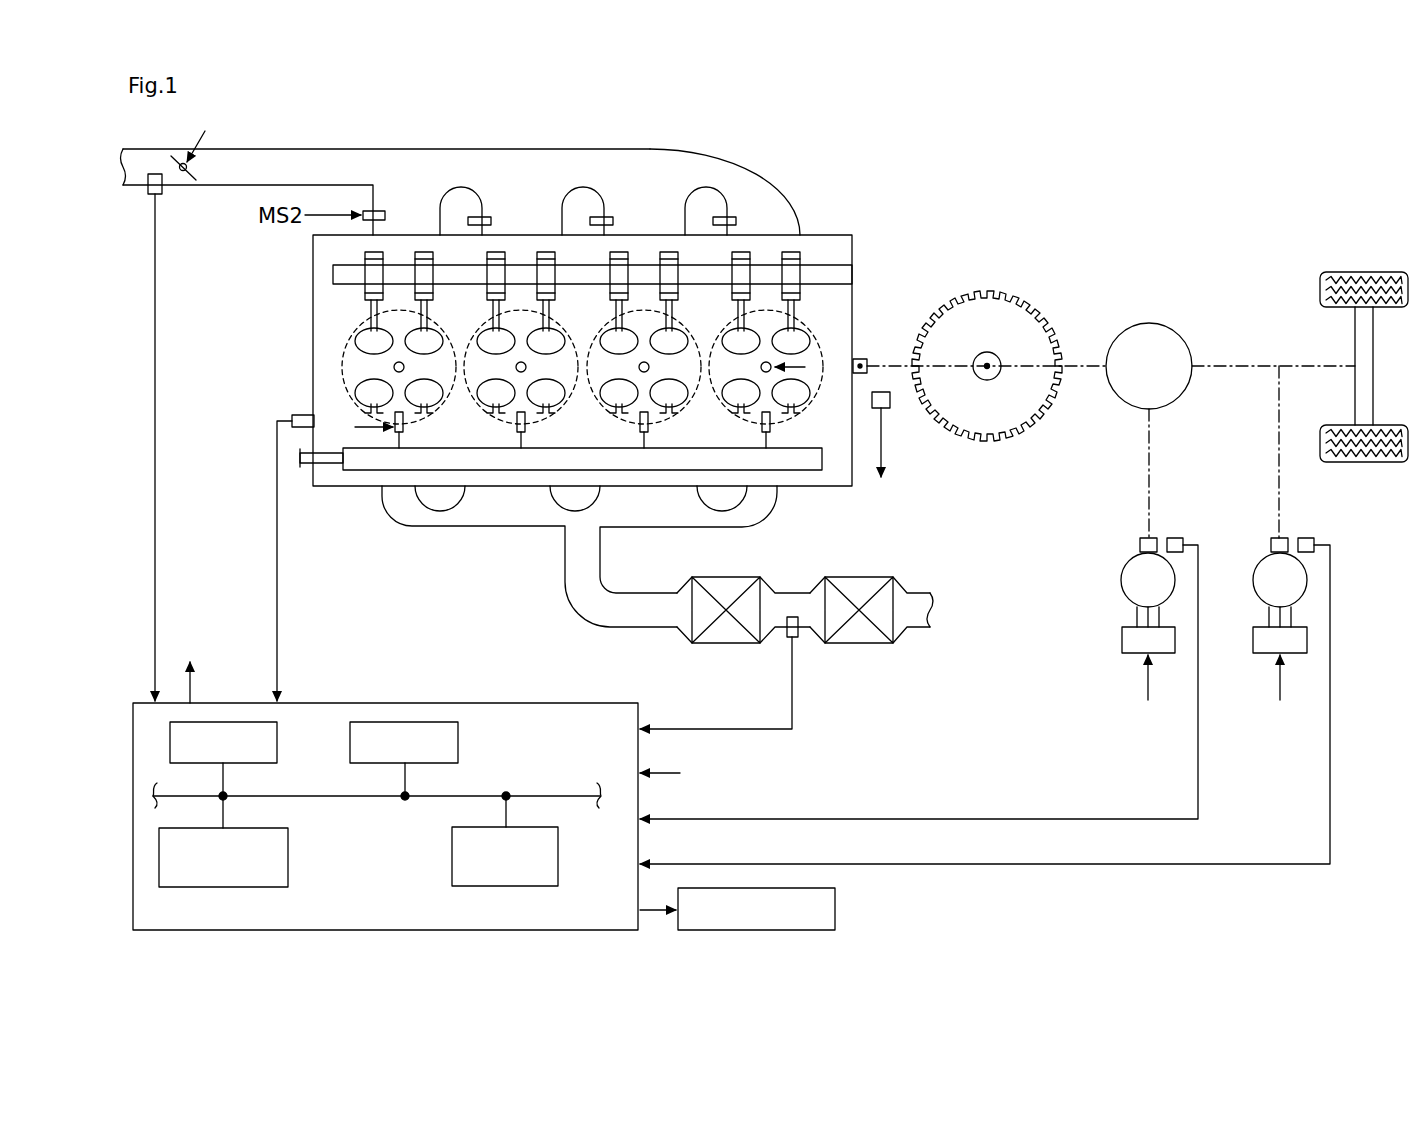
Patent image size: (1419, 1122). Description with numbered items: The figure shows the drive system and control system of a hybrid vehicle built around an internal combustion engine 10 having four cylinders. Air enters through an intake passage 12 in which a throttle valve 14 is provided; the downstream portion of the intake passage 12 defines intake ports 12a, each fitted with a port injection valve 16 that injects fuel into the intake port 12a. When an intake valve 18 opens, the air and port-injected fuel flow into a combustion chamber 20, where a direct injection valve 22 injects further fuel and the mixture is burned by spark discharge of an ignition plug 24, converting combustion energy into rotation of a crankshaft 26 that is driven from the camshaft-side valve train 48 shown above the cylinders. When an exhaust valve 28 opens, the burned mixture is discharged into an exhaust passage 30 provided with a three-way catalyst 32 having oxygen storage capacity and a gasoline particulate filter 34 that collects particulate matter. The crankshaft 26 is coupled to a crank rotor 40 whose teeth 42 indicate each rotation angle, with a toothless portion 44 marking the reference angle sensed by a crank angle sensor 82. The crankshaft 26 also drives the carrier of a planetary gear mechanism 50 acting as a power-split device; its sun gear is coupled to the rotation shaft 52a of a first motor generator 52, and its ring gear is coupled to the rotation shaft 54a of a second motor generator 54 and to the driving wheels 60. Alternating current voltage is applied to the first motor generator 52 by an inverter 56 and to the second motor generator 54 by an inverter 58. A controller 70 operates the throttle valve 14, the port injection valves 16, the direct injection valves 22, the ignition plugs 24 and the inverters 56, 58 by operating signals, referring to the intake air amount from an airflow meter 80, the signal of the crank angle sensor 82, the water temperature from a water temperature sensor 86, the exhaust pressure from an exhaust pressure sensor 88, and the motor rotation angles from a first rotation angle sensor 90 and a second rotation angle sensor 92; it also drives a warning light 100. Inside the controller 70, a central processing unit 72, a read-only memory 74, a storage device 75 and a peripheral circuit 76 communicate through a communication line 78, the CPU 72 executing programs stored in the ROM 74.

The internal combustion engine 10 is at (855, 211).
The intake passage 12 is at (152, 160).
The intake port 12a is at (786, 205).
The throttle valve 14 is at (193, 166).
The port injection valve 16 is at (705, 212).
The intake valve 18 is at (365, 310).
The combustion chamber 20 is at (343, 358).
The direct injection valve 22 is at (403, 424).
The ignition plug 24 is at (405, 367).
The crankshaft 26 is at (866, 357).
The exhaust valve 28 is at (430, 400).
The exhaust passage 30 is at (655, 520).
The three-way catalyst 32 is at (727, 570).
The gasoline particulate filter 34 is at (857, 570).
The crank rotor 40 is at (1010, 338).
The teeth 42 is at (1042, 315).
The toothless portion 44 is at (1056, 341).
The camshaft 48 is at (832, 264).
The planetary gear mechanism 50 is at (1189, 336).
The first motor generator 52 is at (1120, 518).
The rotation shaft of first motor generator 52a is at (1140, 545).
The second motor generator 54 is at (1264, 496).
The rotation shaft of second motor generator 54a is at (1271, 538).
The inverter 56 is at (1122, 642).
The inverter 58 is at (1254, 642).
The driving wheels 60 is at (1410, 464).
The controller 70 is at (426, 782).
The central processing unit 72 is at (279, 742).
The read-only memory 74 is at (459, 742).
The storage device 75 is at (559, 857).
The peripheral circuit 76 is at (290, 857).
The communication line 78 is at (553, 793).
The airflow meter 80 is at (163, 194).
The crank angle sensor 82 is at (890, 408).
The water temperature sensor 86 is at (291, 415).
The exhaust pressure sensor 88 is at (798, 637).
The first rotation angle sensor 90 is at (1176, 538).
The second rotation angle sensor 92 is at (1310, 538).
The warning light 100 is at (838, 907).